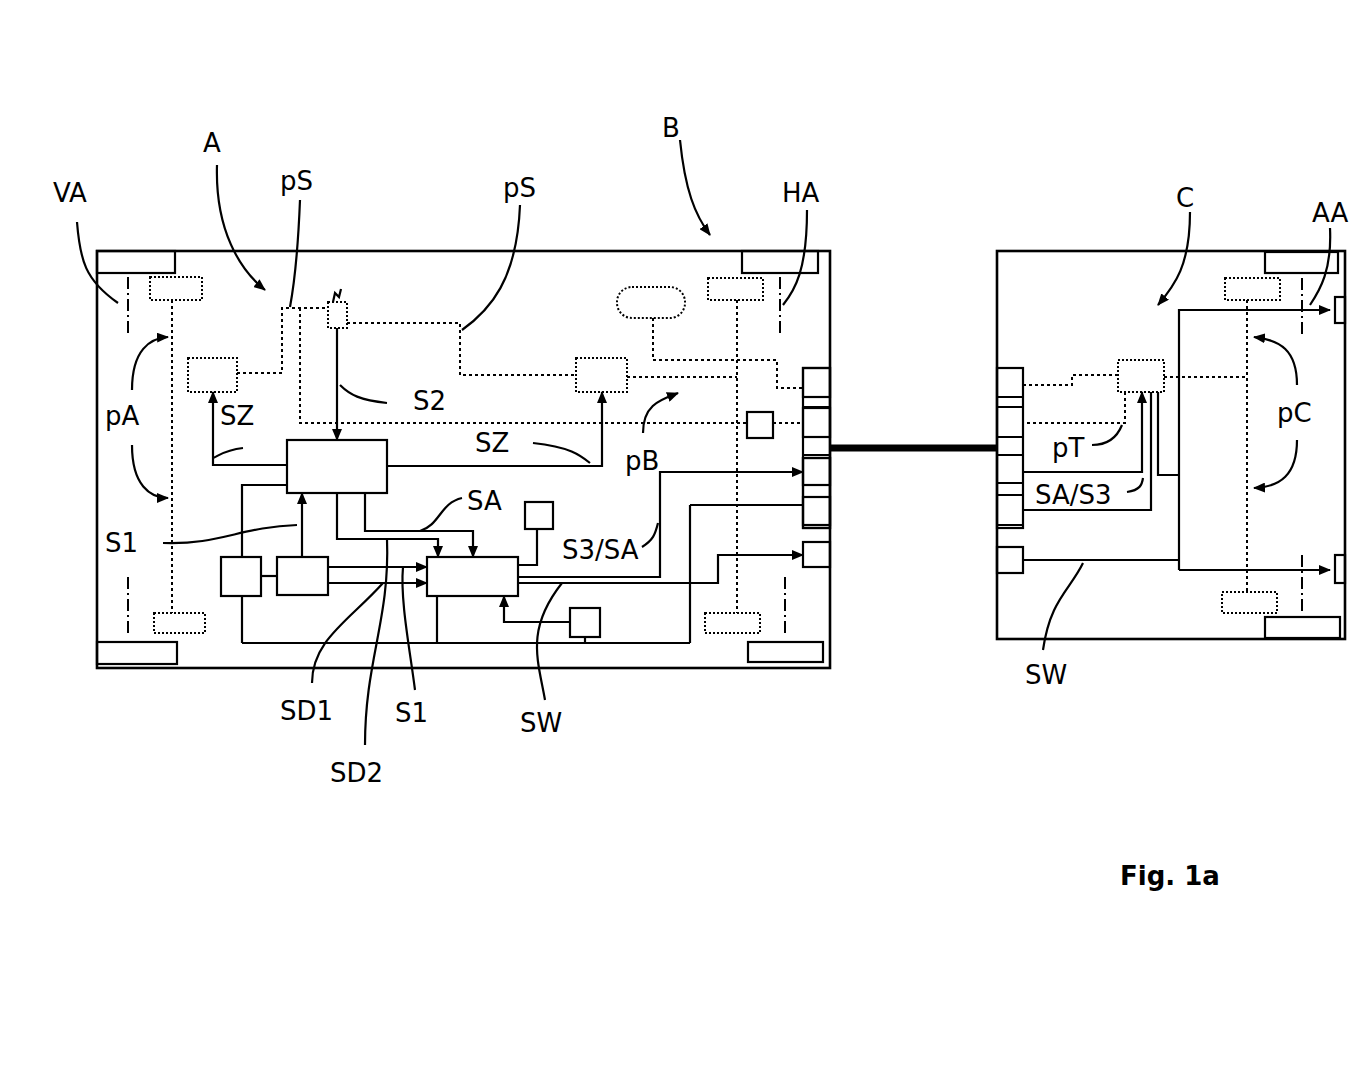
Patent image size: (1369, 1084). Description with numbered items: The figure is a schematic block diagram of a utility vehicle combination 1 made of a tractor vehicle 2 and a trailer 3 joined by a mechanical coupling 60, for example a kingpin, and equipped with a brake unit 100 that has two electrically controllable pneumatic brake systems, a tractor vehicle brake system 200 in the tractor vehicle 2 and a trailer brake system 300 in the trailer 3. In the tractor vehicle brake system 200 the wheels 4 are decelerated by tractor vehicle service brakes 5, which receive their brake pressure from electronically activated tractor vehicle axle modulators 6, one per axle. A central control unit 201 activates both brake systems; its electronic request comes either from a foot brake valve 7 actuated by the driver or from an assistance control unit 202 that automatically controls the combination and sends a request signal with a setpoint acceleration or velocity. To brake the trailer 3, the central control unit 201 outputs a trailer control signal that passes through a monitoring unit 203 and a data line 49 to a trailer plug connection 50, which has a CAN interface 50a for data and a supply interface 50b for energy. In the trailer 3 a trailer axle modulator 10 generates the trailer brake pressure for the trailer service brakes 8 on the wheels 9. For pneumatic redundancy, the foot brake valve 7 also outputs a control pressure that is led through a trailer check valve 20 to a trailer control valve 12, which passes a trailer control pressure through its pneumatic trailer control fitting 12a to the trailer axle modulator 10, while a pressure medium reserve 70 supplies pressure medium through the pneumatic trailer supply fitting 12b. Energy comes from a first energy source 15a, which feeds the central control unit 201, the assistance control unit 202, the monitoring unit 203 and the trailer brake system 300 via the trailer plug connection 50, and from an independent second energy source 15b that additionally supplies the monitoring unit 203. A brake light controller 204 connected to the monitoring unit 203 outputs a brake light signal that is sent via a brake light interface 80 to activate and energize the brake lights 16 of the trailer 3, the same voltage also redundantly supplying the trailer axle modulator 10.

The utility vehicle combination 1 is at (160, 213).
The tractor vehicle 2 is at (465, 251).
The trailer 3 is at (1165, 251).
The wheels 4 is at (137, 665).
The tractor vehicle service brakes 5 is at (208, 634).
The tractor vehicle axle modulators 6 is at (213, 358).
The foot brake valve 7 is at (330, 300).
The trailer service brakes 8 is at (1253, 614).
The wheels 9 is at (1303, 640).
The trailer axle modulator 10 is at (1142, 358).
The trailer control valve 12 is at (888, 369).
The pneumatic trailer control fitting 12a is at (830, 423).
The pneumatic trailer supply fitting 12b is at (830, 385).
The first energy source 15a is at (225, 596).
The second energy source 15b is at (542, 502).
The brake lights 16 is at (1342, 323).
The trailer check valve 20 is at (757, 438).
The data line 49 is at (655, 583).
The trailer plug connection 50 is at (888, 519).
The CAN interface 50a is at (830, 470).
The supply interface 50b is at (830, 510).
The mechanical coupling 60 is at (915, 447).
The pressure medium reserve 70 is at (655, 287).
The brake light interface 80 is at (830, 555).
The brake unit 100 is at (836, 722).
The tractor vehicle brake system 200 is at (470, 685).
The central control unit 201 is at (407, 517).
The assistance control unit 202 is at (302, 596).
The monitoring unit 203 is at (615, 557).
The brake light controller 204 is at (600, 622).
The trailer brake system 300 is at (1133, 610).